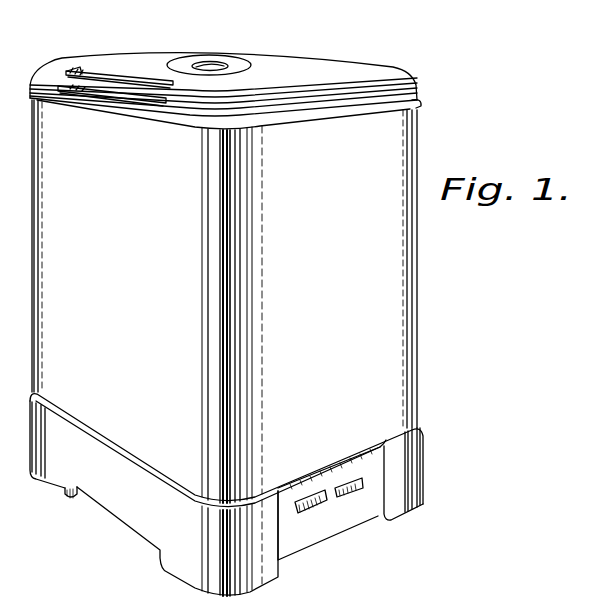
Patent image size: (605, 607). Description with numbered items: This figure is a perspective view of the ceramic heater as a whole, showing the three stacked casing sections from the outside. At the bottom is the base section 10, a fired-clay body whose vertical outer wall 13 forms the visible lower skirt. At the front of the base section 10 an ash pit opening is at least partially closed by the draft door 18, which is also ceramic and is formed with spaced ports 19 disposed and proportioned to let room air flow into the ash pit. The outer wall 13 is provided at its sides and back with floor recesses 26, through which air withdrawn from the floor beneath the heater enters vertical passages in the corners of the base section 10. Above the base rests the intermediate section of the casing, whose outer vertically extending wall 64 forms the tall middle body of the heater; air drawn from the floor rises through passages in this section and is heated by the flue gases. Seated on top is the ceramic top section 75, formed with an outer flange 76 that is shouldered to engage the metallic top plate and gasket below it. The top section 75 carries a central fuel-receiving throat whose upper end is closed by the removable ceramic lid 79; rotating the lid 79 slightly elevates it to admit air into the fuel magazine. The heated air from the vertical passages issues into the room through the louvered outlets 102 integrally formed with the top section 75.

The base section 10 is at (407, 488).
The outer wall 13 is at (132, 505).
The draft door 18 is at (357, 513).
The ports 19 is at (355, 429).
The floor recesses 26 is at (75, 499).
The outer wall 64 is at (397, 360).
The top section 75 is at (392, 80).
The outer flange 76 is at (421, 103).
The lid 79 is at (248, 57).
The louvered outlets 102 is at (78, 72).